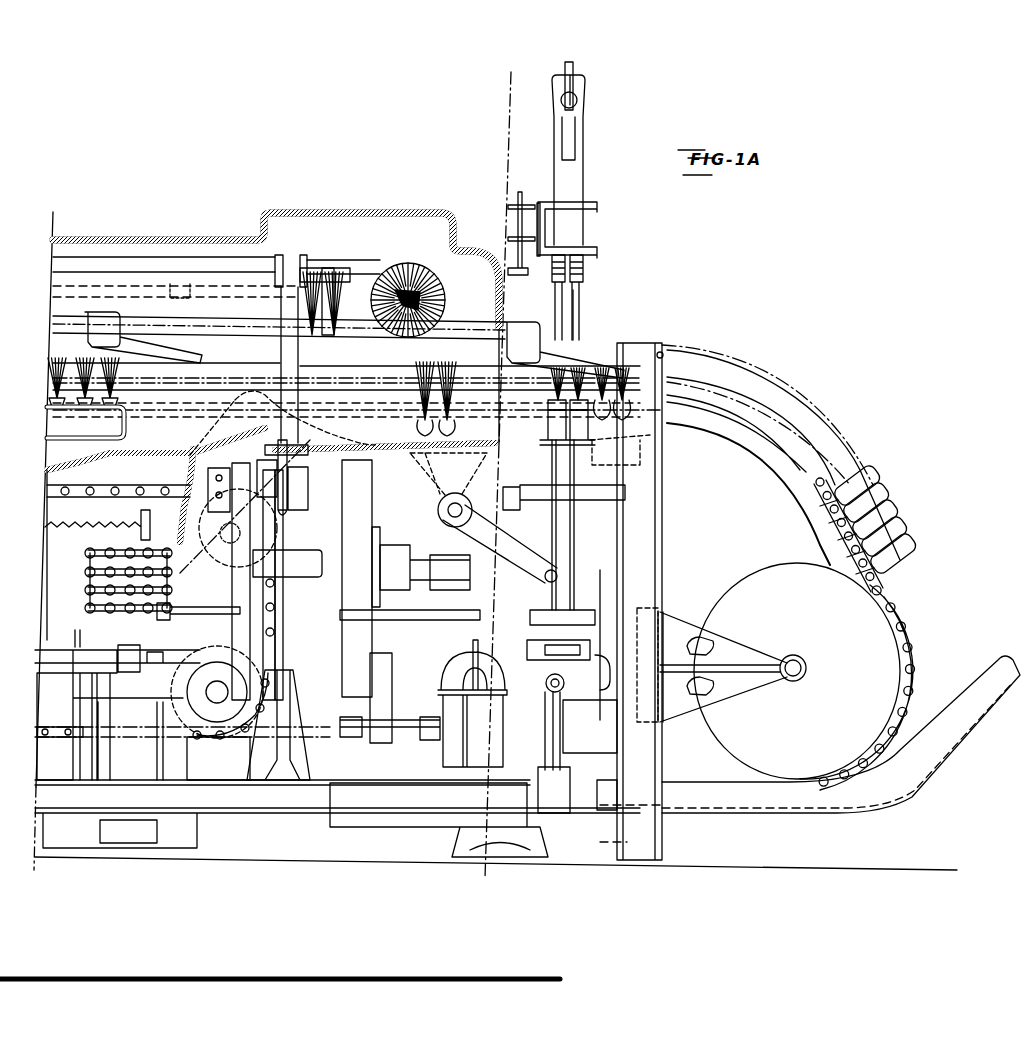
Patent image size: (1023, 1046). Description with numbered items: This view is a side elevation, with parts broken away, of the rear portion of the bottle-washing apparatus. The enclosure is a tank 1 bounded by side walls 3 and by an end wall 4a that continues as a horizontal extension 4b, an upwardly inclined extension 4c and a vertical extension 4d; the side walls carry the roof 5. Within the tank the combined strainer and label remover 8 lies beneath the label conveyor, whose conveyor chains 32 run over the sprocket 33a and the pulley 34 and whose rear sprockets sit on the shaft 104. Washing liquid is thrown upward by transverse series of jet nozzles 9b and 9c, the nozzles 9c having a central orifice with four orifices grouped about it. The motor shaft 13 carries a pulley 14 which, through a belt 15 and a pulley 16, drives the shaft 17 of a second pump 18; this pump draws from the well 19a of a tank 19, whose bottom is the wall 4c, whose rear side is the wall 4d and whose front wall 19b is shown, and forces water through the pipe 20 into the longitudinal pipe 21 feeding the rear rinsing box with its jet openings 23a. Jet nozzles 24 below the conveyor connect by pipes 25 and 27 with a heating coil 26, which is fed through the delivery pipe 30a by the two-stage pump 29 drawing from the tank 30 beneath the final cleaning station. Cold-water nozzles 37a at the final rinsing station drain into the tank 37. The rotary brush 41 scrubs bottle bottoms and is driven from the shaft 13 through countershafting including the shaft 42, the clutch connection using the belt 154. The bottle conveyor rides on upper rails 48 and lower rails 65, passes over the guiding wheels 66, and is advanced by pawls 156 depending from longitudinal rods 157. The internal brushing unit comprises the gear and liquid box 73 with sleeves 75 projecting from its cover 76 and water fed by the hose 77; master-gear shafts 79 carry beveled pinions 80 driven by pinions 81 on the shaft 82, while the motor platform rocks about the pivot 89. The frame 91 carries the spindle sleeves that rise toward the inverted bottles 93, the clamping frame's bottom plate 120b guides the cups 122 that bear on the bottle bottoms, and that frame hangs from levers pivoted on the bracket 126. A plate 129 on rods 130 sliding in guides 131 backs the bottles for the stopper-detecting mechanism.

The tank 1 is at (57, 555).
The side walls 3 is at (525, 84).
The end wall 4a is at (185, 490).
The horizontal extension 4b is at (212, 458).
The upwardly inclined extension 4c is at (372, 578).
The vertical extension 4d is at (510, 387).
The roof 5 is at (103, 240).
The combined strainer and label remover 8 is at (80, 523).
The jet nozzles 9b is at (85, 398).
The jet nozzles 9c is at (57, 391).
The shaft 13 is at (440, 298).
The pulley 14 is at (283, 640).
The belt 15 is at (232, 589).
The pulley 16 is at (232, 490).
The shaft 17 is at (268, 478).
The second pump 18 is at (312, 466).
The tank 19 is at (365, 420).
The well 19a is at (268, 533).
The front wall 19b is at (260, 379).
The pipe 20 is at (292, 353).
The pipe 21 is at (140, 262).
The jet openings 23a is at (362, 282).
The jet nozzles 24 is at (445, 399).
The pipe 25 is at (322, 270).
The heating coil 26 is at (115, 550).
The pipe 27 is at (198, 290).
The two-stage pump 29 is at (448, 707).
The tank 30 is at (590, 704).
The delivery pipe 30a is at (400, 620).
The conveyor chains 32 is at (95, 490).
The sprocket 33a is at (287, 562).
The sprocket 34 is at (293, 700).
The tank 37 is at (655, 456).
The jet nozzles 37a is at (608, 376).
The rotary brush 41 is at (414, 262).
The shaft 42 is at (303, 585).
The rails 48 is at (781, 455).
The rails 65 is at (745, 800).
The guiding and supporting wheels 66 is at (797, 671).
The gear and liquid containing box 73 is at (587, 615).
The sleeve 75 is at (556, 526).
The cover 76 is at (561, 600).
The hose 77 is at (605, 588).
The shafts 79 is at (548, 665).
The beveled pinion 80 is at (545, 685).
The beveled pinion 81 is at (548, 700).
The shaft 82 is at (550, 720).
The pivot 89 is at (798, 682).
The frame 91 is at (556, 446).
The bottles 93 is at (870, 492).
The shaft 104 is at (225, 722).
The bottom plate 120b is at (572, 251).
The cup 122 is at (586, 273).
The bracket 126 is at (586, 86).
The plate 129 is at (542, 311).
The rods 130 is at (516, 217).
The guides 131 is at (532, 205).
The belt 154 is at (372, 505).
The pawls 156 is at (165, 352).
The rods 157 is at (145, 320).